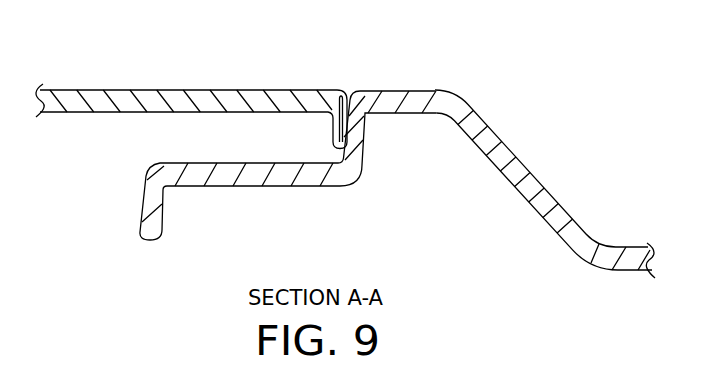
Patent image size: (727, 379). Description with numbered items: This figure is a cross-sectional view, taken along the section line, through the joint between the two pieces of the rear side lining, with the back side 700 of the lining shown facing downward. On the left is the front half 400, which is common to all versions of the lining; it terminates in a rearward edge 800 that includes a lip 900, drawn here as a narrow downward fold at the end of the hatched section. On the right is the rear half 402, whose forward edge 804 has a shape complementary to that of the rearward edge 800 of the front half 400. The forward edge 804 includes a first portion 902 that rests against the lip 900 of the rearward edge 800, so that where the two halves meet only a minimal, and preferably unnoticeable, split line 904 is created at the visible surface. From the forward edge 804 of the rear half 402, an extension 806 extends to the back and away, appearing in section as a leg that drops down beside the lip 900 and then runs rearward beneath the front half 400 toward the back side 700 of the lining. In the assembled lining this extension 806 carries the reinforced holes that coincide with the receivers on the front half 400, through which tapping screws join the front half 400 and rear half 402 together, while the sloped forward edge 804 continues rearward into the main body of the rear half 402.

The front half 400 is at (40, 86).
The rear half 402 is at (642, 244).
The back side 700 is at (93, 134).
The rearward edge 800 is at (238, 100).
The forward edge 804 is at (468, 108).
The extension 806 is at (353, 155).
The lip 900 is at (343, 88).
The first portion 902 is at (398, 90).
The split line 904 is at (336, 67).